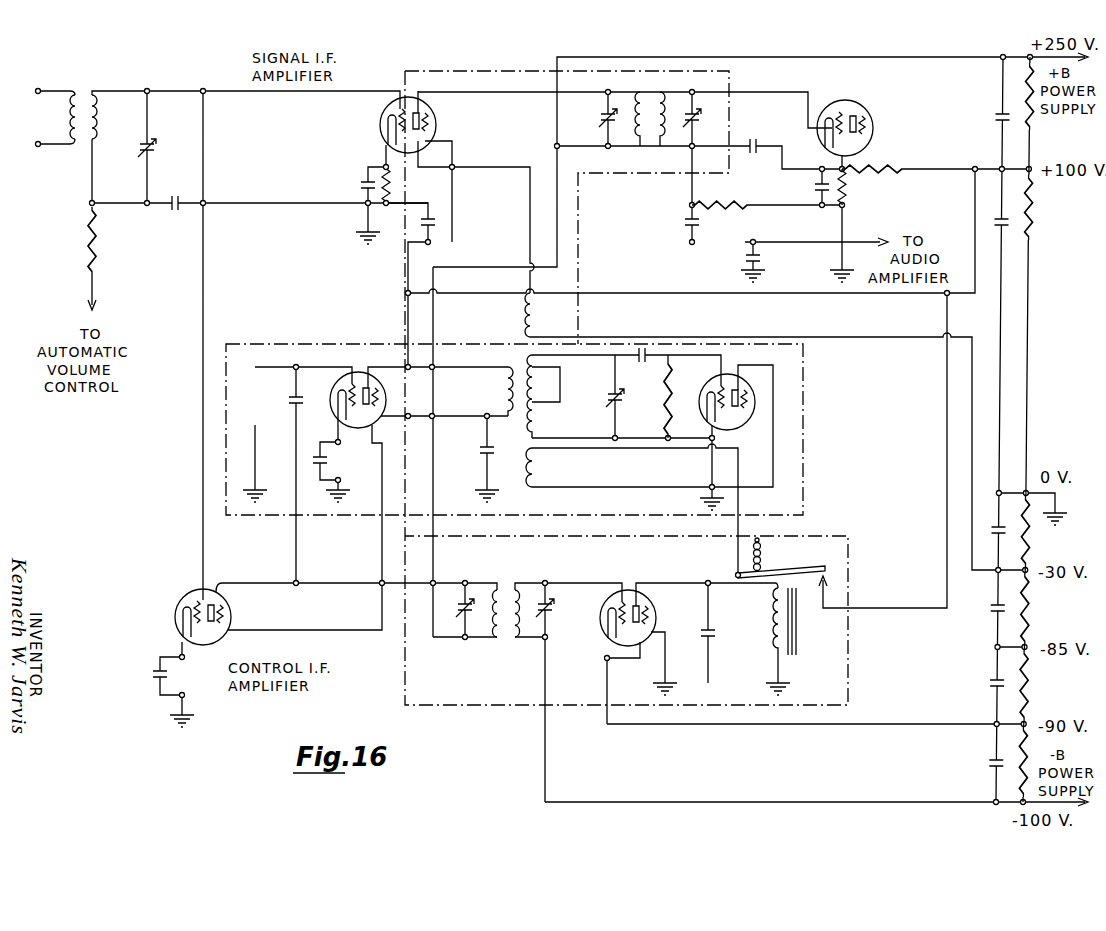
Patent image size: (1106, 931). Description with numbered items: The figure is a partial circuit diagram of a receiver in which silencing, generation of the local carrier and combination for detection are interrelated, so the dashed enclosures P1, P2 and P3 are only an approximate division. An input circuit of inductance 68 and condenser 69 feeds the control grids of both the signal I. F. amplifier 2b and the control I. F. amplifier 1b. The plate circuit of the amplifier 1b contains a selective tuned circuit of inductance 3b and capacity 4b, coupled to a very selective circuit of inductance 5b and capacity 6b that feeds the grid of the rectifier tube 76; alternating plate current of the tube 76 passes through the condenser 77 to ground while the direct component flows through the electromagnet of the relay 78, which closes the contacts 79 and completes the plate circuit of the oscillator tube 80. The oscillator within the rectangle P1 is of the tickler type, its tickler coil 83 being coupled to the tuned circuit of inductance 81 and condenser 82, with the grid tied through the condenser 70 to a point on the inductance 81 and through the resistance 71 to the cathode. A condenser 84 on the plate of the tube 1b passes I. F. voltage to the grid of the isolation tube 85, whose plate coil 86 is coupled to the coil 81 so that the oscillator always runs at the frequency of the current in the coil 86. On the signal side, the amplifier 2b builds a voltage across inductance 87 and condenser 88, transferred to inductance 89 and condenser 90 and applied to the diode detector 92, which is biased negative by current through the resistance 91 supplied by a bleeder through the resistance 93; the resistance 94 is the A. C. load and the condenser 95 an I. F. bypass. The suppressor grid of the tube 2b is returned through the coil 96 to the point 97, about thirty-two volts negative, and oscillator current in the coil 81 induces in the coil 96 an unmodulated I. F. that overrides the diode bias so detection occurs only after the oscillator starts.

The inductance 68 is at (98, 129).
The condenser 69 is at (154, 152).
The signal I. F. amplifier 2b is at (381, 131).
The inductance 87 is at (646, 88).
The condenser 88 is at (601, 123).
The inductance 89 is at (657, 145).
The condenser 90 is at (694, 123).
The diode detector 92 is at (871, 116).
The resistance 93 is at (882, 166).
The condenser 95 is at (752, 141).
The resistance 94 is at (740, 203).
The resistance 91 is at (849, 195).
The coil 96 is at (537, 329).
The isolation tube 85 is at (338, 389).
The condenser 84 is at (293, 405).
The coil 86 is at (506, 402).
The inductance 81 is at (535, 418).
The condenser 82 is at (615, 405).
The condenser 70 is at (641, 366).
The resistance 71 is at (672, 389).
The oscillator tube 80 is at (735, 427).
The tickler coil 83 is at (537, 468).
The contacts 79 is at (805, 567).
The point 97 is at (996, 573).
The inductance 3b is at (498, 585).
The capacity 4b is at (457, 610).
The inductance 5b is at (511, 639).
The capacity 6b is at (552, 620).
The rectifier tube 76 is at (630, 588).
The condenser 77 is at (713, 630).
The relay 78 is at (770, 640).
The control I. F. amplifier 1b is at (232, 630).
The rectangle P1 is at (803, 408).
The enclosure P2 is at (848, 675).
The enclosure P3 is at (730, 80).